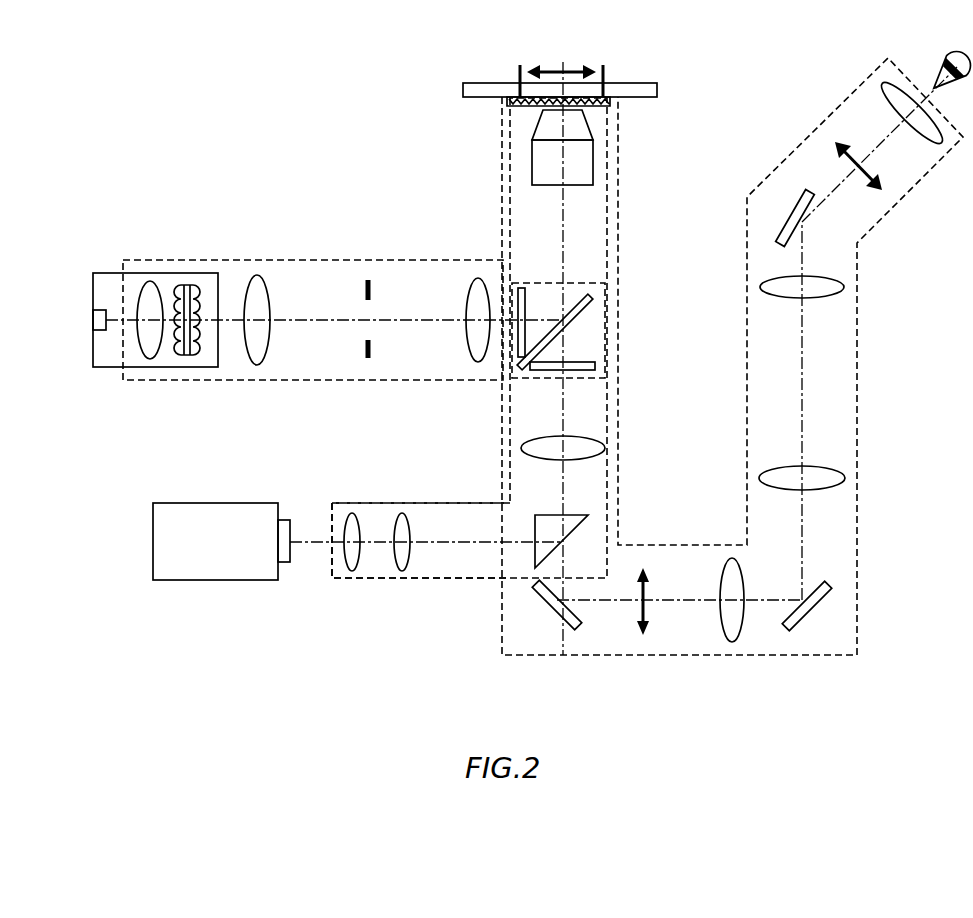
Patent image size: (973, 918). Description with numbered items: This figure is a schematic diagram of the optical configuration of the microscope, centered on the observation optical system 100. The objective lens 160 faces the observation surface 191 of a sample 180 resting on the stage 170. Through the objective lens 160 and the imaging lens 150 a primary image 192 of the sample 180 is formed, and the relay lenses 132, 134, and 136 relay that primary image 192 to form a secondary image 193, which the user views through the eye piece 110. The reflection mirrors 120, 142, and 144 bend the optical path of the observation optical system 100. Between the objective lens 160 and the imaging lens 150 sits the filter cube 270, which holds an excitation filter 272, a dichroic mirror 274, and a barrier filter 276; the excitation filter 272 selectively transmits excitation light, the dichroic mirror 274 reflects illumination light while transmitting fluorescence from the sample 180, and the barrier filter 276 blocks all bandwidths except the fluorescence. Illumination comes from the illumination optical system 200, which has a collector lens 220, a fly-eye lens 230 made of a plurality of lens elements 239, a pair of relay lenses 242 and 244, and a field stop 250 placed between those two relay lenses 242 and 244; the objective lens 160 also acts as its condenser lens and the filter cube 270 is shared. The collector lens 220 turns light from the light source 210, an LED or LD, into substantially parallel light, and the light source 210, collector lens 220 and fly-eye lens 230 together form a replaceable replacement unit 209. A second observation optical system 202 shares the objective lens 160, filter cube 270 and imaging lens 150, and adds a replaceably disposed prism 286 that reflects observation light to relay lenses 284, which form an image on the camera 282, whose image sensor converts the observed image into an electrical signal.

The observation optical system 100 is at (860, 400).
The eye piece 110 is at (880, 85).
The reflection mirror 120 is at (785, 225).
The relay lens 132 is at (757, 288).
The relay lens 134 is at (755, 478).
The relay lens 136 is at (720, 628).
The reflection mirror 142 is at (785, 627).
The reflection mirror 144 is at (560, 620).
The imaging lens 150 is at (512, 448).
The objective lens 160 is at (597, 183).
The stage 170 is at (633, 98).
The sample 180 is at (612, 73).
The observation surface 191 is at (535, 72).
The primary image 192 is at (640, 628).
The secondary image 193 is at (835, 152).
The illumination optical system 200 is at (317, 380).
The second observation optical system 202 is at (372, 502).
The replacement unit 209 is at (243, 162).
The light source 210 is at (104, 305).
The collector lens 220 is at (147, 280).
The fly-eye lens 230 is at (185, 287).
The lens elements 239 is at (177, 285).
The relay lens 242 is at (256, 278).
The relay lens 244 is at (478, 276).
The field stop 250 is at (369, 278).
The filter cube 270 is at (612, 282).
The excitation filter 272 is at (520, 287).
The dichroic mirror 274 is at (595, 322).
The barrier filter 276 is at (592, 370).
The camera 282 is at (212, 582).
The relay lenses 284 is at (413, 592).
The prism 286 is at (532, 557).